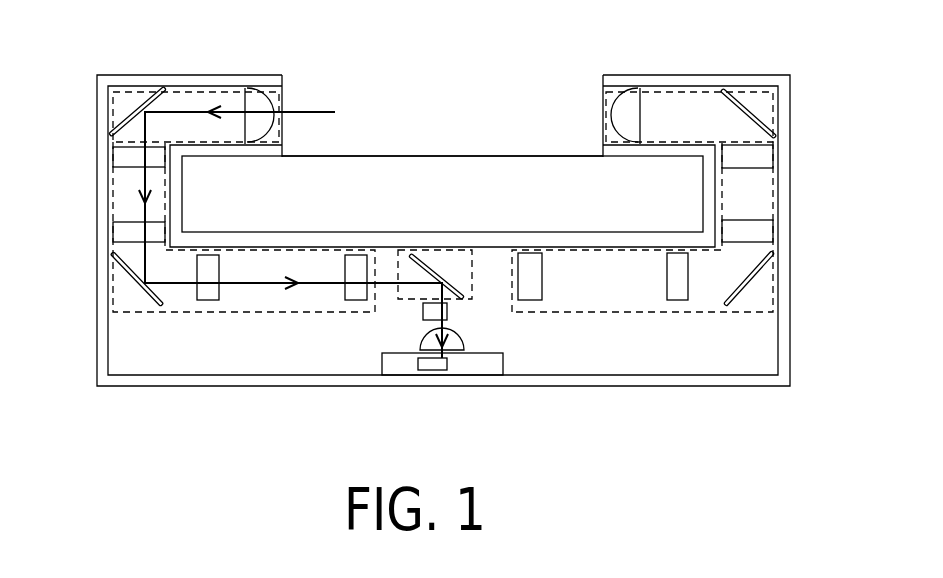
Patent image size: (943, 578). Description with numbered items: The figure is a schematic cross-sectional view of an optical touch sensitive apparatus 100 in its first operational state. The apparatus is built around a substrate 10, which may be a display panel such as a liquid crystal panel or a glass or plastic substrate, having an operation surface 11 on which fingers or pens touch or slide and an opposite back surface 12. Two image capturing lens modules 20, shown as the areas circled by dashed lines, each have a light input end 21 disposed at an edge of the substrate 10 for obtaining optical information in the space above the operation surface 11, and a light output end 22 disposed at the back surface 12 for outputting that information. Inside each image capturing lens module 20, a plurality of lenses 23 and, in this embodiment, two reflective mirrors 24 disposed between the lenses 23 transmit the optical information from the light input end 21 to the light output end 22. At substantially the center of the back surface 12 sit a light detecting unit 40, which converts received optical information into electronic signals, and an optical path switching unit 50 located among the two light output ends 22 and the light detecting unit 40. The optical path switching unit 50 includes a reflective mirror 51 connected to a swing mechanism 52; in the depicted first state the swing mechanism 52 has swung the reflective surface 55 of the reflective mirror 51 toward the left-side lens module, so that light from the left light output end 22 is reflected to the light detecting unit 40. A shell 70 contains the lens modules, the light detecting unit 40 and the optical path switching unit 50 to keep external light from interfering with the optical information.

The optical touch sensitive apparatus 100 is at (840, 436).
The shell 70 is at (790, 103).
The substrate 10 is at (672, 172).
The operation surface 11 is at (511, 154).
The back surface 12 is at (557, 230).
The image capturing lens module 20 is at (113, 119).
The light input end 21 is at (298, 99).
The light output end 22 is at (504, 282).
The lens 23 is at (248, 100).
The reflective mirror 24 is at (146, 88).
The light detecting unit 40 is at (443, 371).
The optical path switching unit 50 is at (478, 292).
The reflective mirror 51 is at (420, 252).
The swing mechanism 52 is at (445, 252).
The reflective surface 55 is at (422, 279).